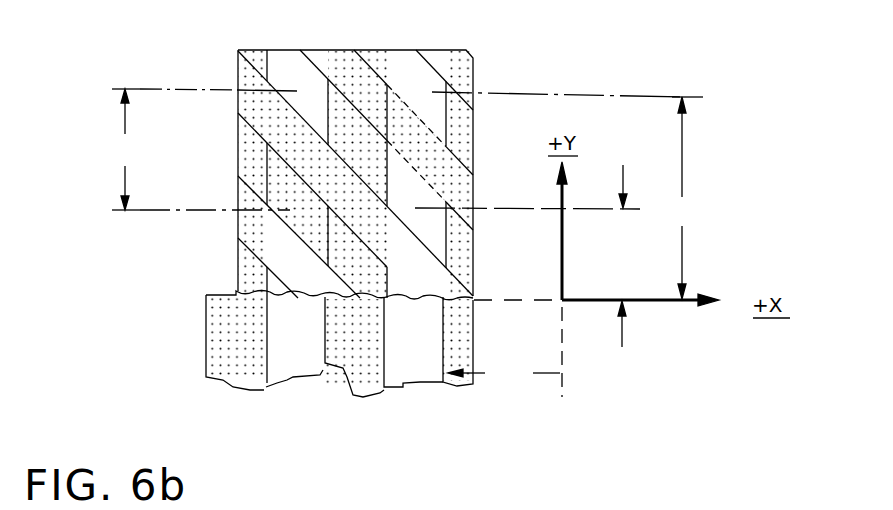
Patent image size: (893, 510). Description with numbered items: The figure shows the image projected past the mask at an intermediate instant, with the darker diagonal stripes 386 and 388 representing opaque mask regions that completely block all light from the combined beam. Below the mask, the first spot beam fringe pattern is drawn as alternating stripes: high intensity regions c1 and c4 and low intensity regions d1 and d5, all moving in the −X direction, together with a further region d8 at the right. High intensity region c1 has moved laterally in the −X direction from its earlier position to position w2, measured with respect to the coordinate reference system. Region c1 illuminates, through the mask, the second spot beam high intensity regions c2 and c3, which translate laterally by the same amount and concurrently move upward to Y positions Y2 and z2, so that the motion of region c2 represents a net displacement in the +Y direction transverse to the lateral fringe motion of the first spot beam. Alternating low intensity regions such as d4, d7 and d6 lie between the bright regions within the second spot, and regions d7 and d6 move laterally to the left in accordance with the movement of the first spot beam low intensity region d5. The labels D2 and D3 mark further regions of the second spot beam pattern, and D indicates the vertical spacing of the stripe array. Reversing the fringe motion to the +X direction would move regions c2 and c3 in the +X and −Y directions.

The diagonal stripe 386 is at (252, 100).
The diagonal stripe 388 is at (327, 66).
The low intensity region d4 is at (376, 61).
The high intensity region c3 is at (430, 112).
The dotted region D3 is at (458, 143).
The low intensity region d7 is at (252, 160).
The high intensity region c2 is at (450, 205).
The dotted region D2 is at (460, 268).
The low intensity region d6 is at (255, 278).
The low intensity region d5 is at (248, 363).
The high intensity region c4 is at (309, 363).
The low intensity region d1 is at (362, 363).
The high intensity region c1 is at (420, 365).
The dotted region d8 is at (458, 348).
The position w2 is at (504, 376).
The depth dimension D is at (126, 149).
The Y position Y2 is at (622, 256).
The Y position z2 is at (687, 198).